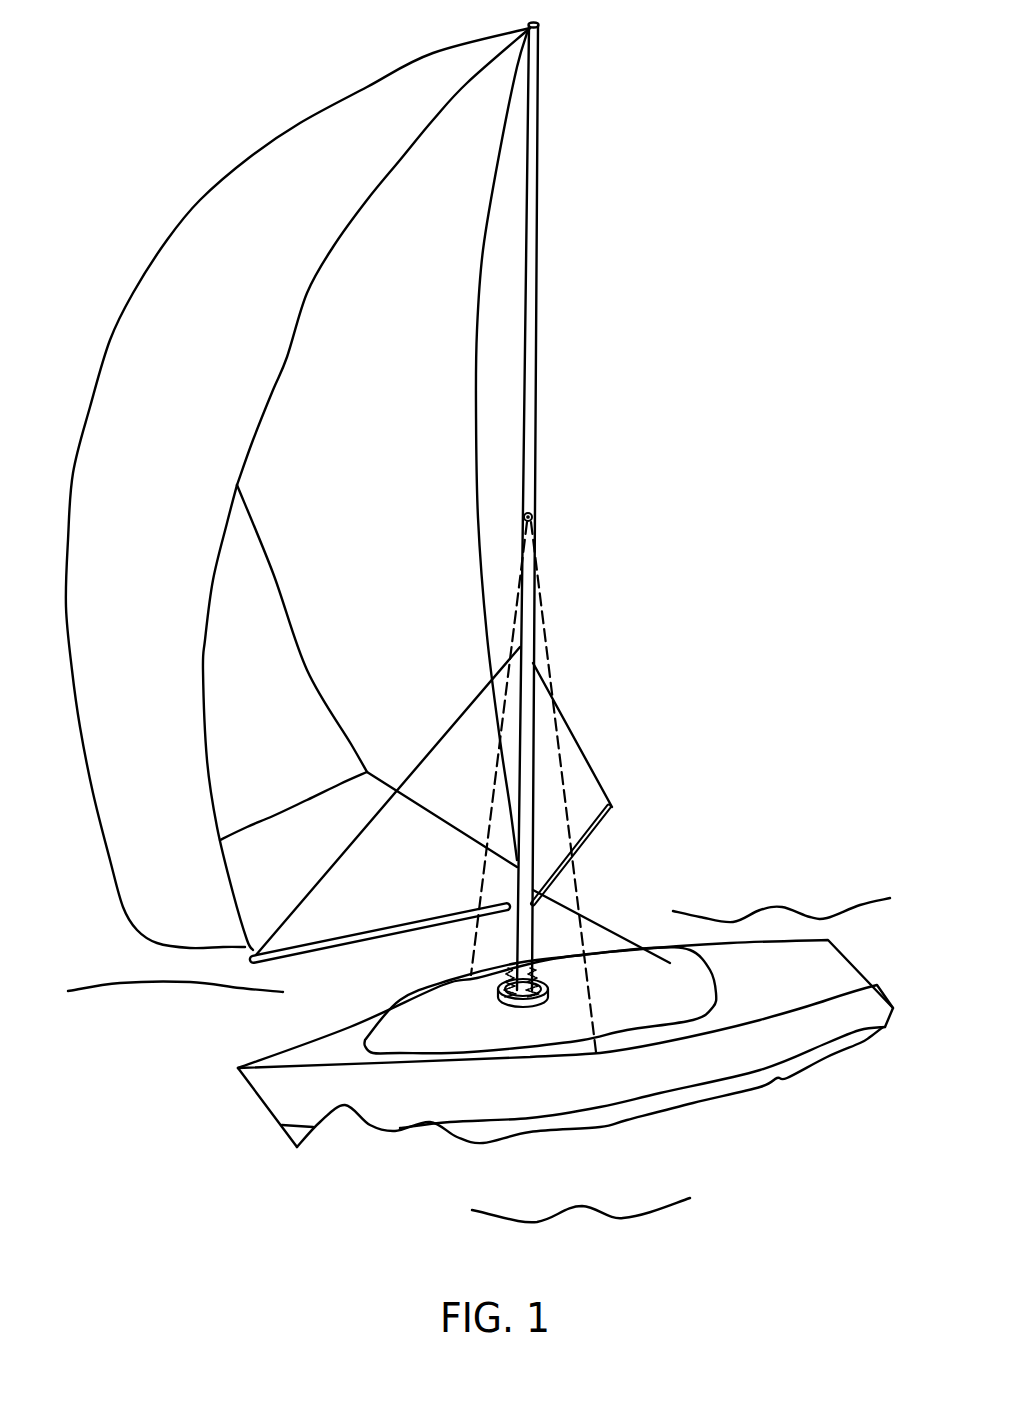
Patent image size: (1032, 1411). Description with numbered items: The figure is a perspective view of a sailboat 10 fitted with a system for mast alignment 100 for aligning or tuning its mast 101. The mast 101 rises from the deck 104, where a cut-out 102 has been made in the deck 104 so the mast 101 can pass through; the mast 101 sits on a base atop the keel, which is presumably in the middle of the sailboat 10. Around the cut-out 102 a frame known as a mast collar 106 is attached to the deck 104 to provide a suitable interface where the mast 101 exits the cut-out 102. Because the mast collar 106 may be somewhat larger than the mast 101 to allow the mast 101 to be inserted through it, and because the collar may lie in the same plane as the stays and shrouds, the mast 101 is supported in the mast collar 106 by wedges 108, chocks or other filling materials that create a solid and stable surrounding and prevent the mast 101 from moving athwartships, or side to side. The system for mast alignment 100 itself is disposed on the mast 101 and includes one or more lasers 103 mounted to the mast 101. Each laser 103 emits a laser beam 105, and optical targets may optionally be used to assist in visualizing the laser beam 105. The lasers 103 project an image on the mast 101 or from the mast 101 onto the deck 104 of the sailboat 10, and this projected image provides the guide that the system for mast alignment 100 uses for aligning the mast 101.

The sailboat 10 is at (637, 181).
The system for mast alignment 100 is at (552, 531).
The mast 101 is at (539, 347).
The cut-out 102 is at (500, 999).
The laser 103 is at (535, 517).
The deck 104 is at (840, 968).
The laser beam 105 is at (483, 873).
The mast collar 106 is at (548, 999).
The wedges 108 is at (505, 972).